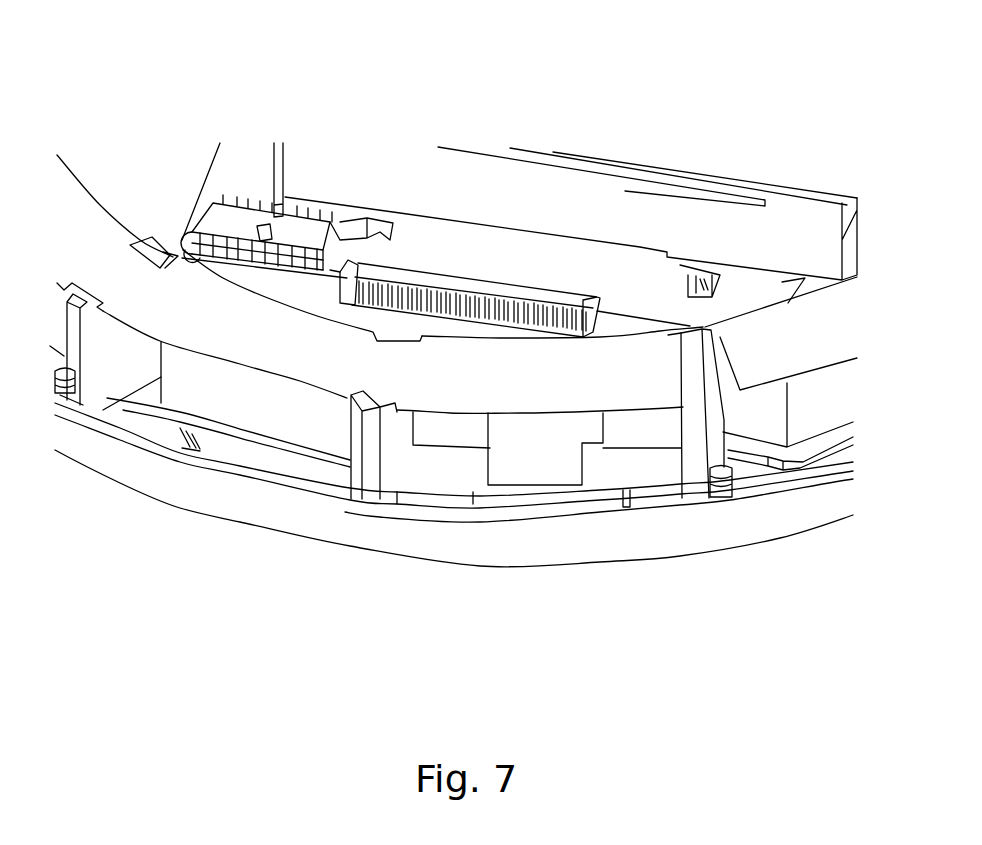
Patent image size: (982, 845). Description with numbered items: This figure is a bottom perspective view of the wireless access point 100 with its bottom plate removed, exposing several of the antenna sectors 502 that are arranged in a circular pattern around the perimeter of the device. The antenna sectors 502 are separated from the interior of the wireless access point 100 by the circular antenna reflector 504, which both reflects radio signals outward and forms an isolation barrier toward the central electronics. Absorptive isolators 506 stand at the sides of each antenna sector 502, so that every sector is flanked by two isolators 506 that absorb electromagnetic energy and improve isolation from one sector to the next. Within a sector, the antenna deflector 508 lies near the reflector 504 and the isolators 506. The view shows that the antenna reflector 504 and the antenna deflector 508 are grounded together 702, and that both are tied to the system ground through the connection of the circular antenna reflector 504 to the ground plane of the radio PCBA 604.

The wireless access point 100 is at (706, 118).
The antenna sector 502 is at (732, 607).
The circular antenna reflector 504 is at (653, 423).
The absorptive isolator 506 is at (95, 393).
The antenna deflector 508 is at (243, 353).
The radio printed circuit board assembly 604 is at (430, 456).
The grounding connection 702 is at (660, 455).